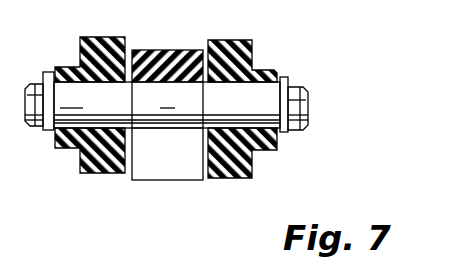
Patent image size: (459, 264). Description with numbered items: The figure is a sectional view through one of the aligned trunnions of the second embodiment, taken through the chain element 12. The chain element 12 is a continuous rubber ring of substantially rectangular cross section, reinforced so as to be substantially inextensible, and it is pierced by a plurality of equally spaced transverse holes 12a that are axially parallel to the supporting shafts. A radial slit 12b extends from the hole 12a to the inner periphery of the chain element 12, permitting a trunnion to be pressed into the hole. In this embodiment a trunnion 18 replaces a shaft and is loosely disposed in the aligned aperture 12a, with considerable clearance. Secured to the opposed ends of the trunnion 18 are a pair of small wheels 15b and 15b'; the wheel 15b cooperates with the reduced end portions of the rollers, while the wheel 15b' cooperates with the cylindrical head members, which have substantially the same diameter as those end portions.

The chain element 12 is at (160, 58).
The holes 12a is at (150, 132).
The radial slit 12b is at (180, 170).
The small wheel 15b is at (250, 123).
The small wheel 15b' is at (80, 121).
The trunnion 18 is at (263, 102).